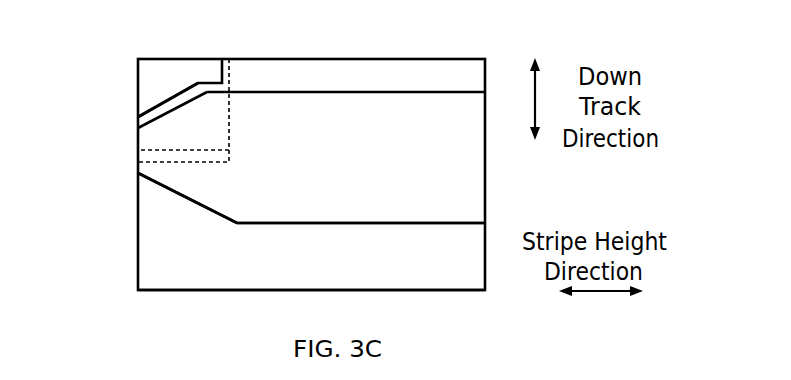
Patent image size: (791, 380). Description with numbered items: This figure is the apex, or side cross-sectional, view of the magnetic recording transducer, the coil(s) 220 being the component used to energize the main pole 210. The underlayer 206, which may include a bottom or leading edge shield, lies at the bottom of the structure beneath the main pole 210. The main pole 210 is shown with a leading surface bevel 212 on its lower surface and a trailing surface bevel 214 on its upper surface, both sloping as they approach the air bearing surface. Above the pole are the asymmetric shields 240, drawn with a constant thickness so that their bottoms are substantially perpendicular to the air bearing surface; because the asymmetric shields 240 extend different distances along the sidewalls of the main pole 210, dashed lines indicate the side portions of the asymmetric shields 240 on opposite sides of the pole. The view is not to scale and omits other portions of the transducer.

The coil 220 is at (77, 28).
The asymmetric shields 240 is at (187, 59).
The trailing surface bevel 214 is at (150, 98).
The leading surface bevel 212 is at (152, 201).
The main pole 210 is at (311, 157).
The underlayer 206 is at (311, 256).